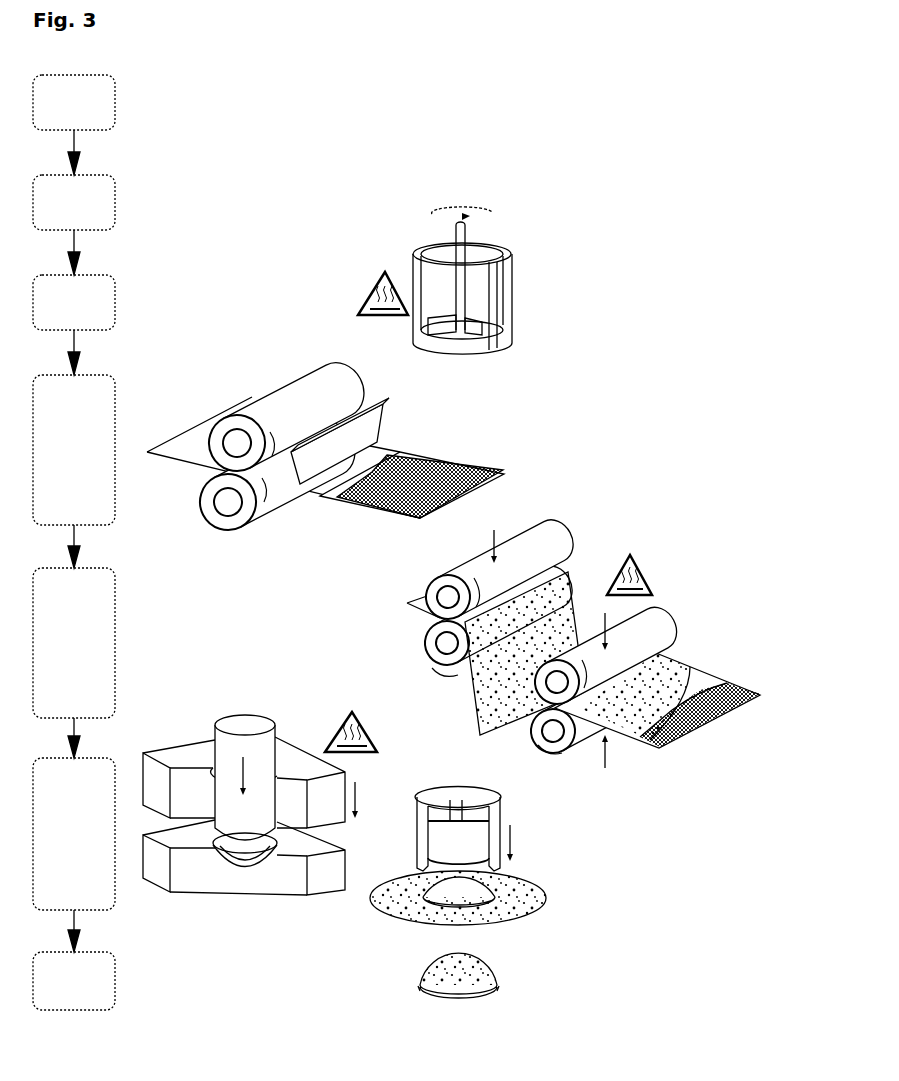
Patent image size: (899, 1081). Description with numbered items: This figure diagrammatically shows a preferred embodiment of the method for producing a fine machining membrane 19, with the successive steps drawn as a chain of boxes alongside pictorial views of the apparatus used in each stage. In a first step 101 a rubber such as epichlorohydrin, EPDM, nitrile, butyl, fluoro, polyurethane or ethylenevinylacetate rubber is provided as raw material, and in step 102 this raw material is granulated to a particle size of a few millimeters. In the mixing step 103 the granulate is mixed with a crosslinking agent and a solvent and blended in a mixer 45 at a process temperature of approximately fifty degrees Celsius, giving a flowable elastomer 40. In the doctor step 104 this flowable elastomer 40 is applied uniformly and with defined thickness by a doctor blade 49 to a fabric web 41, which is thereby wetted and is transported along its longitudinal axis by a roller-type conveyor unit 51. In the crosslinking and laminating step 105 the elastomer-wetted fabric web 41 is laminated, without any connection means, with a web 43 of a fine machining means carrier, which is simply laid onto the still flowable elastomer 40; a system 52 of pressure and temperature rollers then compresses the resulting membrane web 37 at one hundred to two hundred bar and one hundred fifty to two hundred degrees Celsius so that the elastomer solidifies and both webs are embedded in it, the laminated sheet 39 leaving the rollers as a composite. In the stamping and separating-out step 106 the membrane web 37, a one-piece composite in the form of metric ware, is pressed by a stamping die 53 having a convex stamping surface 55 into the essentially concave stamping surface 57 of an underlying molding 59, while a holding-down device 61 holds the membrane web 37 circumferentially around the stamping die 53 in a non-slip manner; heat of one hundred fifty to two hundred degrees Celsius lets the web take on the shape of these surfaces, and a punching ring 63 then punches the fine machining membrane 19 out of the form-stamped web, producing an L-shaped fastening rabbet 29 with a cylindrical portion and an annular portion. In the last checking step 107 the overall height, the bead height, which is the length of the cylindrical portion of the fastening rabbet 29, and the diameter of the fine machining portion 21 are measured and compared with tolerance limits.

The first step 101 is at (56, 108).
The granulating step 102 is at (56, 208).
The mixing step 103 is at (56, 308).
The doctor step 104 is at (56, 454).
The crosslinking and laminating step 105 is at (56, 648).
The stamping and separating-out step 106 is at (56, 838).
The checking step 107 is at (56, 986).
The mixer 45 is at (522, 292).
The roller-type conveyor unit 51 is at (300, 410).
The doctor blade 49 is at (357, 428).
The flowable elastomer 40 is at (383, 452).
The fabric web 41 is at (397, 501).
The system of pressure and temperature rollers 52 is at (589, 620).
The membrane web 37 is at (408, 598).
The web of a fine machining means carrier 43 is at (667, 672).
The rolled sheet 39 is at (702, 687).
The stamping die 53 is at (228, 745).
The holding-down device 61 is at (195, 760).
The convex stamping surface 55 is at (240, 840).
The concave stamping surface 57 is at (252, 880).
The underlying molding 59 is at (327, 882).
The punching ring 63 is at (500, 815).
The fine machining portion 21 is at (452, 962).
The fine machining membrane 19 is at (474, 997).
The fastening rabbet 29 is at (460, 1003).